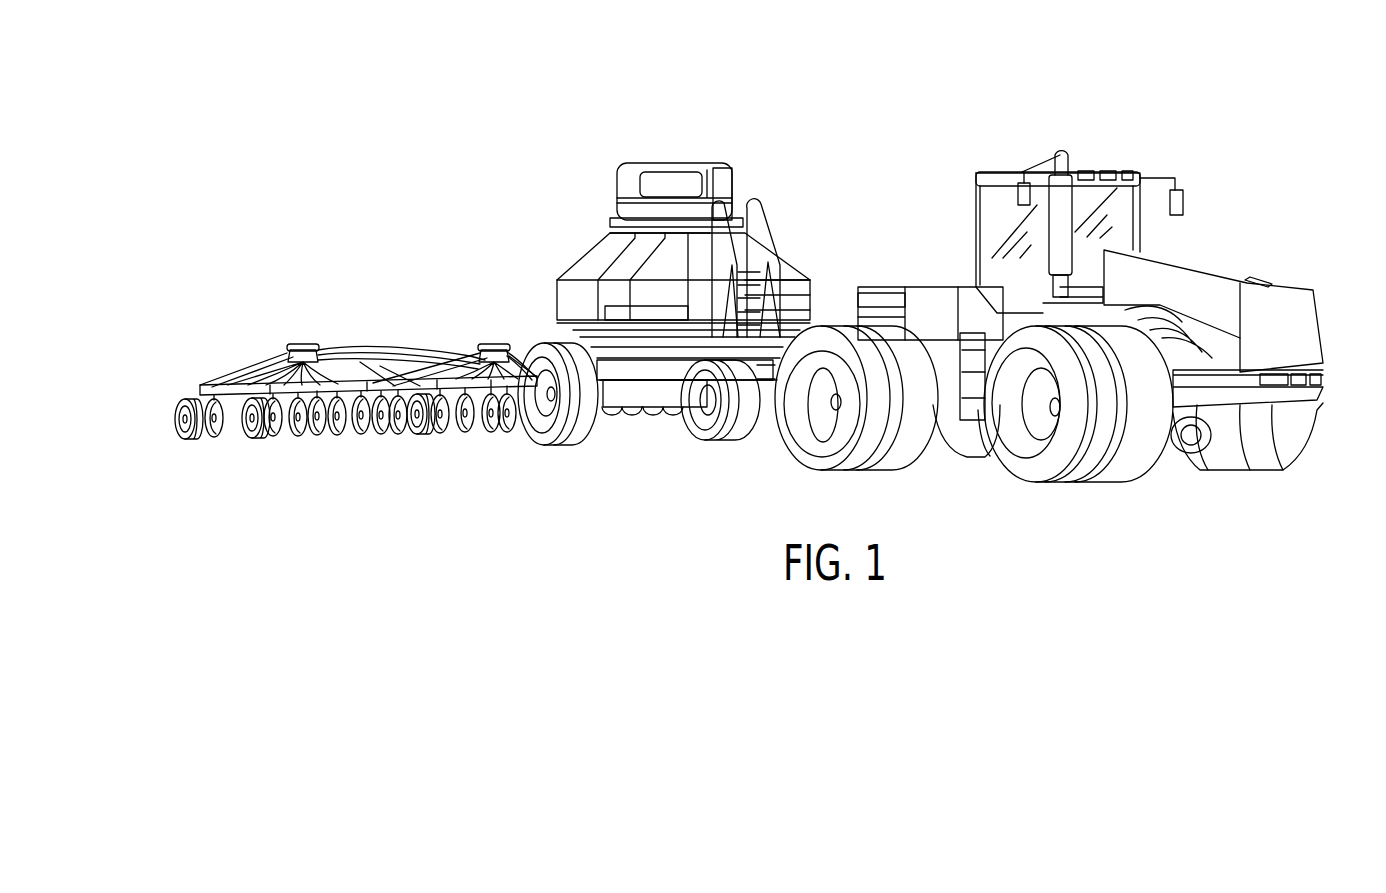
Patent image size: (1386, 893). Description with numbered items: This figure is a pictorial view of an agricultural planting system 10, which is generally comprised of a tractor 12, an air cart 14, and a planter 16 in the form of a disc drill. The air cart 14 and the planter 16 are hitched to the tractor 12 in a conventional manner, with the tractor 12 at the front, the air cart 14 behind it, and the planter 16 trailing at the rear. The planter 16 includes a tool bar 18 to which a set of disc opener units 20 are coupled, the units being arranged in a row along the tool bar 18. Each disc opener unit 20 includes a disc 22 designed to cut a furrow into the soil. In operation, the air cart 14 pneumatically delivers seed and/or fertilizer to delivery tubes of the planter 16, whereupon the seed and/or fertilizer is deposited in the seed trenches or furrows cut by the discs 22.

The agricultural planting system 10 is at (1266, 70).
The tractor 12 is at (1266, 266).
The air cart 14 is at (738, 153).
The planter 16 is at (279, 334).
The tool bar 18 is at (418, 386).
The disc opener units 20 is at (487, 430).
The disc 22 is at (312, 430).